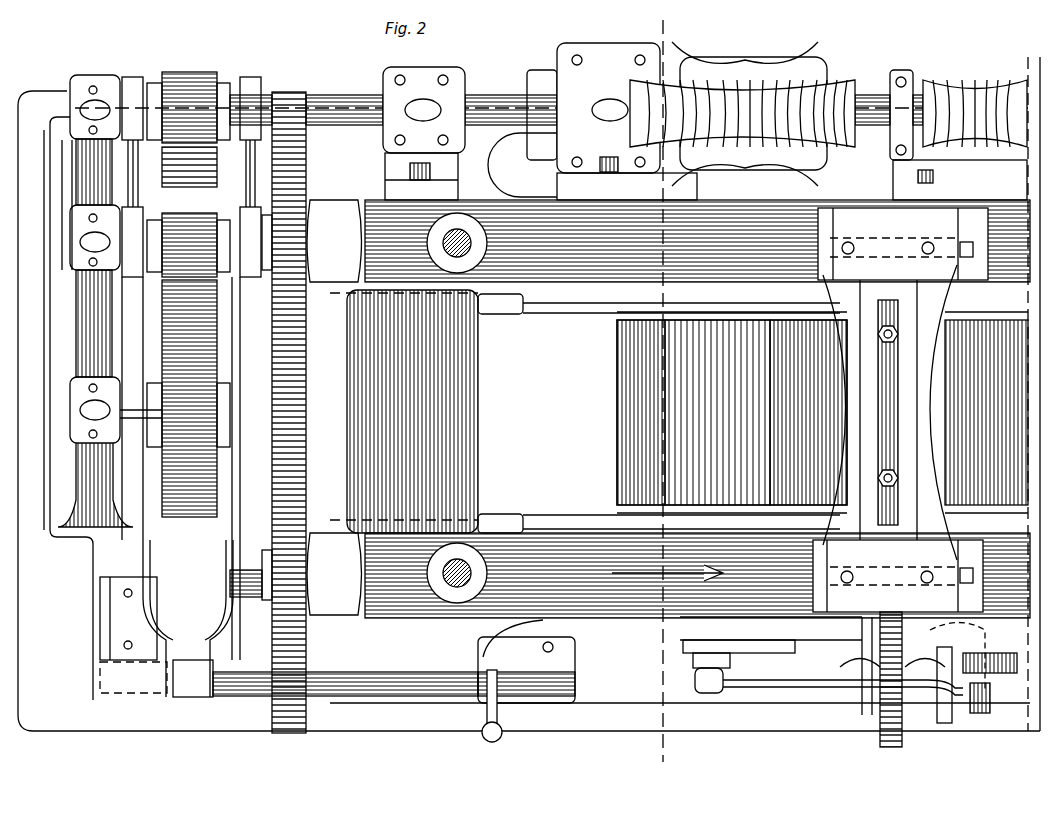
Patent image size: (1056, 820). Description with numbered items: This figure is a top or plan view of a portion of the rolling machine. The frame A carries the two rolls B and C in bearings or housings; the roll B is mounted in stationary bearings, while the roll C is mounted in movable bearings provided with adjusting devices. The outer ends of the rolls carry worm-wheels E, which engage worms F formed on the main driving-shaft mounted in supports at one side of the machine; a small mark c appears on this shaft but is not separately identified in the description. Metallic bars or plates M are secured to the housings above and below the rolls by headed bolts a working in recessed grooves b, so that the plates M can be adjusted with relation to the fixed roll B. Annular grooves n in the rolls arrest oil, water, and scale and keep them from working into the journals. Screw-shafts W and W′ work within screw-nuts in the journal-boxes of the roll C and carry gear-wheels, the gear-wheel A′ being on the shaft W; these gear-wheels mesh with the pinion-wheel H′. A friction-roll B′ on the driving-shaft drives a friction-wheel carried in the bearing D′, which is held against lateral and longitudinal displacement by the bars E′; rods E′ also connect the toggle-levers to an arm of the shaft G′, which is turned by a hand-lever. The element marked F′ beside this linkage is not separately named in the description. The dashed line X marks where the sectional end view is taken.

The frame A is at (697, 409).
The gear-wheel A′ is at (268, 412).
The roll B is at (925, 412).
The friction-roll B′ is at (188, 107).
The roll C is at (732, 412).
The bearing D′ is at (148, 213).
The worm-wheel E is at (835, 146).
The bar E′ is at (128, 182).
The worm F is at (750, 52).
The bracket arm F′ is at (150, 556).
The shaft G′ is at (621, 670).
The pinion-wheel H′ is at (273, 427).
The metallic bar or plate M is at (900, 410).
The screw-shaft W is at (334, 241).
The screw-shaft W′ is at (334, 574).
The section line X is at (671, 397).
The headed bolt a is at (885, 423).
The recessed groove b is at (953, 412).
The shaft c is at (576, 110).
The annular groove n is at (822, 409).